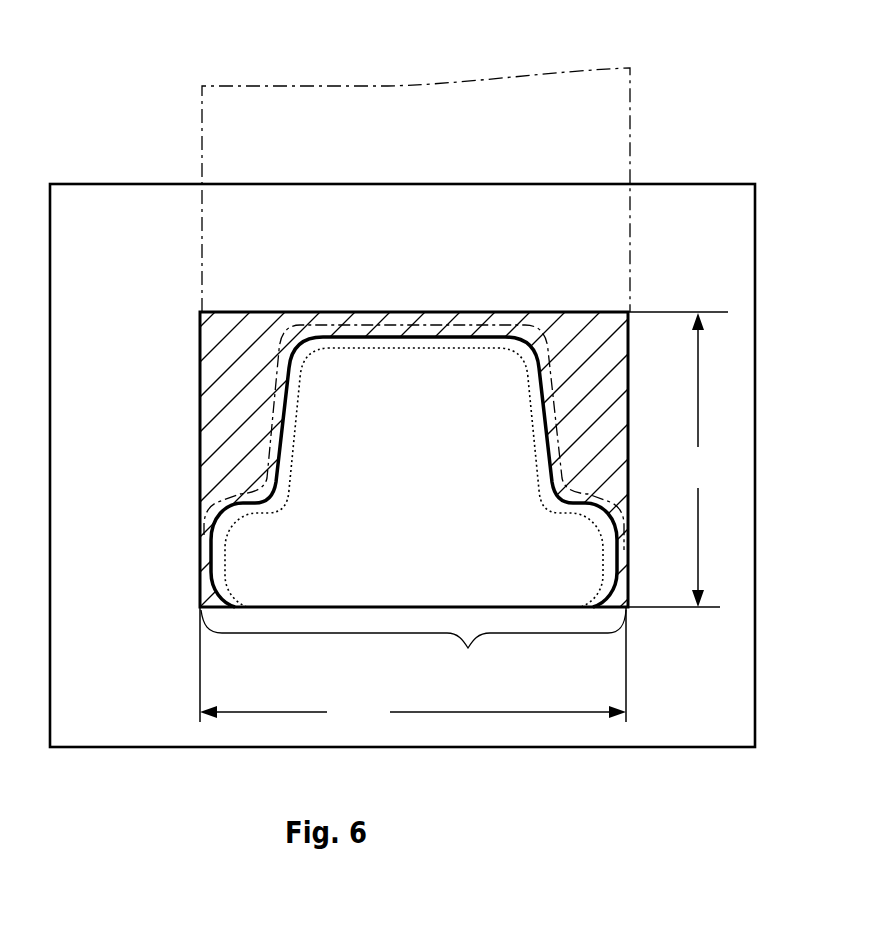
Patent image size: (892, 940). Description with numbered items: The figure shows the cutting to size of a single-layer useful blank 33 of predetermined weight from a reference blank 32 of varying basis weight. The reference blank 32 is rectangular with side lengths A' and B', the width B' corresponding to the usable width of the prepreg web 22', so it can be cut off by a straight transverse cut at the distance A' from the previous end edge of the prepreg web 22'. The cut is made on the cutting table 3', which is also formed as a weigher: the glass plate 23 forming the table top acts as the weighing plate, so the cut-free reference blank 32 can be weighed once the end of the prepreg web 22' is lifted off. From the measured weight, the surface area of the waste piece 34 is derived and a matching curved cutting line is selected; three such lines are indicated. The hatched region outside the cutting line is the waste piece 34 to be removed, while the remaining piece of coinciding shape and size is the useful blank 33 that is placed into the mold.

The cutting table 3' is at (402, 465).
The glass plate 23 is at (141, 254).
The prepreg web 22' is at (462, 190).
The reference blank 32 is at (464, 501).
The useful blank 33 is at (406, 501).
The waste piece 34 is at (250, 394).
The side length A' is at (700, 460).
The side length B' is at (413, 667).